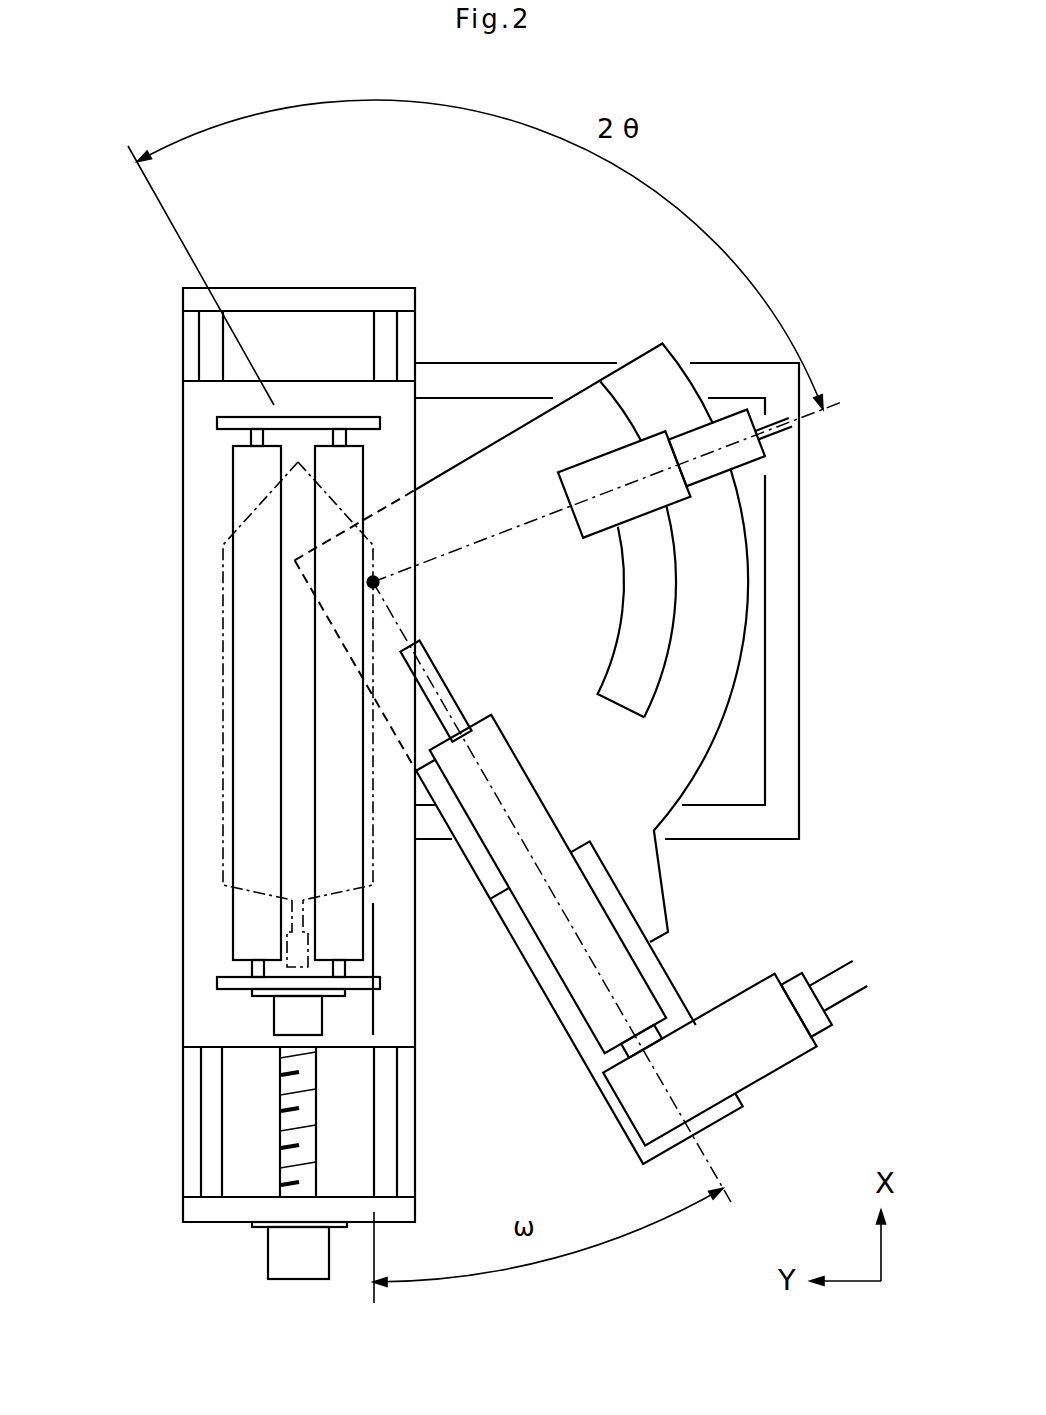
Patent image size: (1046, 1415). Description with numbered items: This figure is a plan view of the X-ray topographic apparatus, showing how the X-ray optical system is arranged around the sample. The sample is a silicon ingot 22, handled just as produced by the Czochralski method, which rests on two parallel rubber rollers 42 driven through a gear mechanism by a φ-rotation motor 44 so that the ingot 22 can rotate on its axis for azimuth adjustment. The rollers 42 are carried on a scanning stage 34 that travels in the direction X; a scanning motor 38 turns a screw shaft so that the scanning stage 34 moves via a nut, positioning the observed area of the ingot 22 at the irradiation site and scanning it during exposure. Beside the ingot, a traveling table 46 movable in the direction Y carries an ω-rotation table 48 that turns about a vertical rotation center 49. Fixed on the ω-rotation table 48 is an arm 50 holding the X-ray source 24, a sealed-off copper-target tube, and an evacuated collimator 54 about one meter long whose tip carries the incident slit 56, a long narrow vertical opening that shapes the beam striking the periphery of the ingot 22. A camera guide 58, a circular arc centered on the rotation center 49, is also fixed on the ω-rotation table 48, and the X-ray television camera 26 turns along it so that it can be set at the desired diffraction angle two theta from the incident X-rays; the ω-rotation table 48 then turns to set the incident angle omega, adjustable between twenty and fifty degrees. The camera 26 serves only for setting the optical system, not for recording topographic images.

The silicon ingot 22 is at (222, 812).
The X-ray source 24 is at (703, 1113).
The X-ray television camera 26 is at (682, 500).
The scanning stage 34 is at (193, 972).
The scanning motor 38 is at (265, 1250).
The rollers 42 is at (233, 910).
The φ-rotation motor 44 is at (273, 1012).
The traveling table 46 is at (765, 698).
The ω-rotation table 48 is at (743, 633).
The rotation center 49 is at (383, 586).
The arm 50 is at (577, 1057).
The collimator 54 is at (559, 985).
The incident slit 56 is at (452, 692).
The camera guide 58 is at (680, 600).